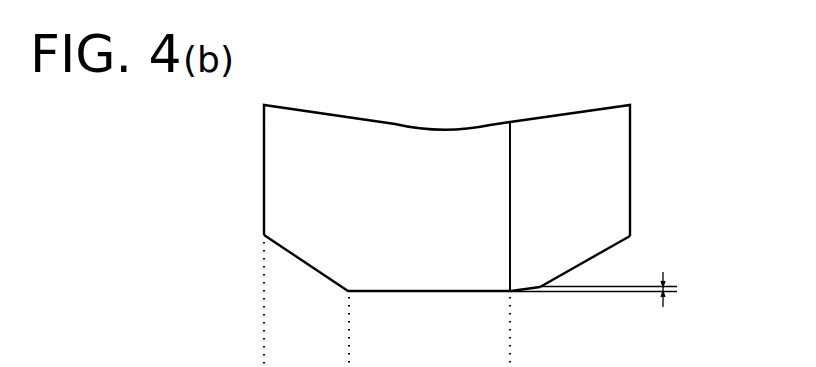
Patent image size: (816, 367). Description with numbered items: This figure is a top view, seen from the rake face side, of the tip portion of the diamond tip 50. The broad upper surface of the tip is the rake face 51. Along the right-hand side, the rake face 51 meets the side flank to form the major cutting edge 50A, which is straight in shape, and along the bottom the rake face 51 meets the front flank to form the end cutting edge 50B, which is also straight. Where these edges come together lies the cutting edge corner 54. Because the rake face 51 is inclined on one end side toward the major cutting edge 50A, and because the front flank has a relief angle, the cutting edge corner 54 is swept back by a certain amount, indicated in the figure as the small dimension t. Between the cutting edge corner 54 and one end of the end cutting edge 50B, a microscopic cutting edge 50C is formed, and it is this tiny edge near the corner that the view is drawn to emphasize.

The diamond tip 50 is at (509, 200).
The rake face 51 is at (444, 202).
The major cutting edge 50A is at (605, 250).
The end cutting edge 50B is at (428, 292).
The microscopic cutting edge 50C is at (530, 292).
The cutting edge corner 54 is at (541, 288).